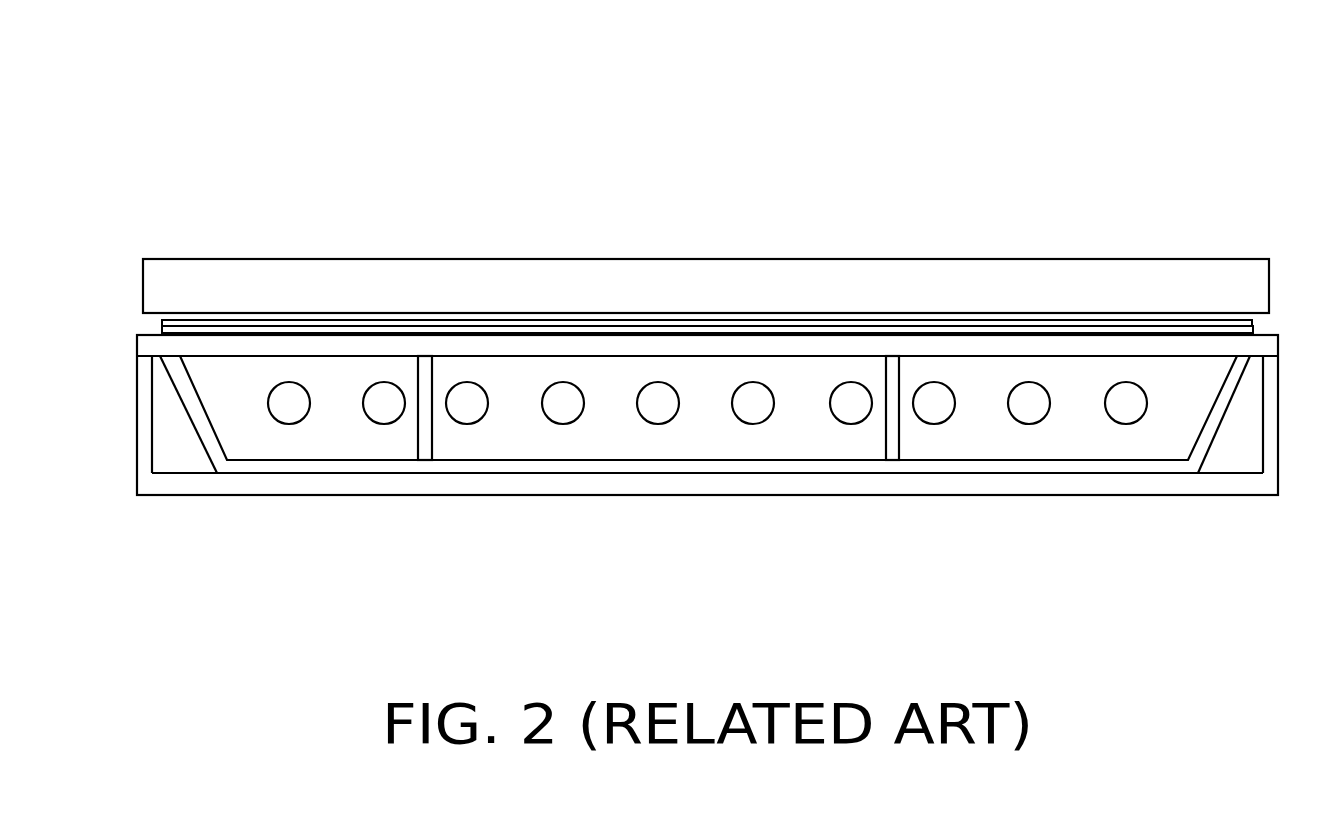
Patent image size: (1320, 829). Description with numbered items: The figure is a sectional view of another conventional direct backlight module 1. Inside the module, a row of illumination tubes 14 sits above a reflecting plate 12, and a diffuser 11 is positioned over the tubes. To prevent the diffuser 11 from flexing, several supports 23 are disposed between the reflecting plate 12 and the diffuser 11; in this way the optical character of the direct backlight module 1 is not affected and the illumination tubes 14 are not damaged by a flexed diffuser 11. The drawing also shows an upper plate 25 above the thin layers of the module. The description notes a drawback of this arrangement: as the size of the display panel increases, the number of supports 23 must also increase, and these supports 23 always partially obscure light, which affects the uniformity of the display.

The direct backlight module 1 is at (79, 103).
The diffuser 11 is at (1148, 345).
The reflecting plate 12 is at (1052, 463).
The illumination tubes 14 is at (563, 403).
The supports 23 is at (425, 447).
The diffuser plate 25 is at (473, 290).